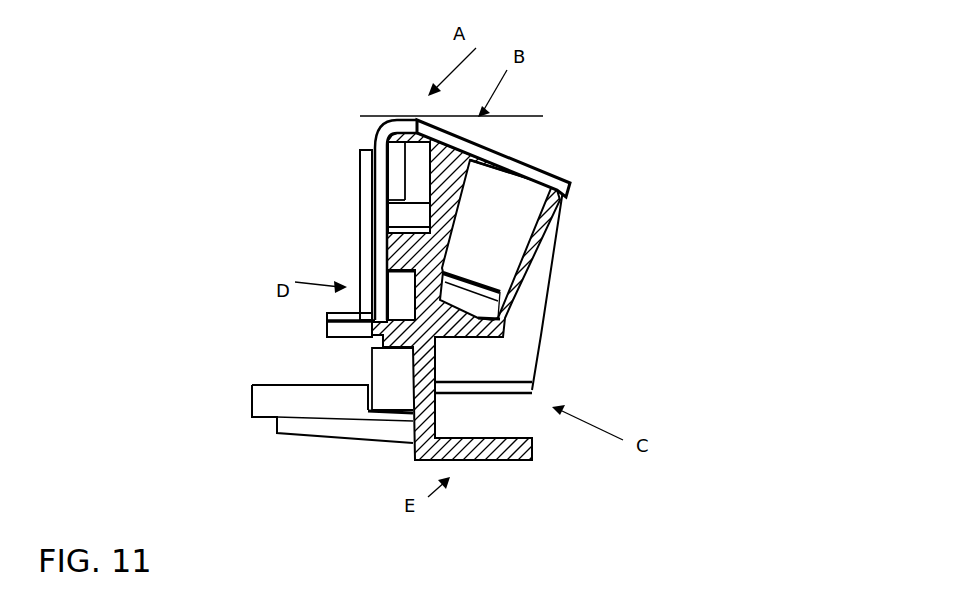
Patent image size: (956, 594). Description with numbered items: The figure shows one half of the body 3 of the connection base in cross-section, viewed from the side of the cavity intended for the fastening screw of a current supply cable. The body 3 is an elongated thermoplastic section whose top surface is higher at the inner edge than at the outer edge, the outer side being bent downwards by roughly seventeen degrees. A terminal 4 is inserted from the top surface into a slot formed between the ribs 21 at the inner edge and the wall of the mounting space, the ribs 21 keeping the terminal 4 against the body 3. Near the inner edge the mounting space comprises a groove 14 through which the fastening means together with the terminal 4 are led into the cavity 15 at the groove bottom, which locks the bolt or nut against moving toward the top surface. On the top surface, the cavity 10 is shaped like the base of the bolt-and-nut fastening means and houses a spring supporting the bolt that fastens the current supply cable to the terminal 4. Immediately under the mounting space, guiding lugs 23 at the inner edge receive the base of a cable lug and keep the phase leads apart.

The body 3 is at (528, 363).
The terminal 4 is at (372, 147).
The cavity 10 is at (517, 190).
The groove 14 is at (415, 165).
The cavity 15 is at (398, 222).
The ribs 21 is at (360, 238).
The guiding lugs 23 is at (343, 332).